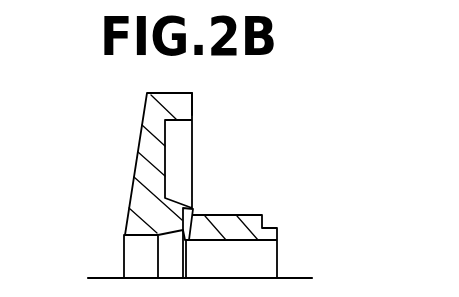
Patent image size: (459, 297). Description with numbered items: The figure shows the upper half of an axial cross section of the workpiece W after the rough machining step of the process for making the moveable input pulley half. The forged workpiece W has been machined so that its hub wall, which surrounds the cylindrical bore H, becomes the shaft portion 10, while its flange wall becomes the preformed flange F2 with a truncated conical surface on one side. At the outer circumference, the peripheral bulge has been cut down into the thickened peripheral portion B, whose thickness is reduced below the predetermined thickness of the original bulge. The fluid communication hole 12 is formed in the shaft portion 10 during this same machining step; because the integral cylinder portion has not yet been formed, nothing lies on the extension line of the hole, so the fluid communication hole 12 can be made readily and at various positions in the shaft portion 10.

The workpiece W is at (126, 160).
The preformed flange F2 is at (148, 140).
The thickened peripheral portion B is at (187, 103).
The cylindrical bore H is at (131, 260).
The fluid communication hole 12 is at (191, 211).
The shaft portion 10 is at (238, 214).